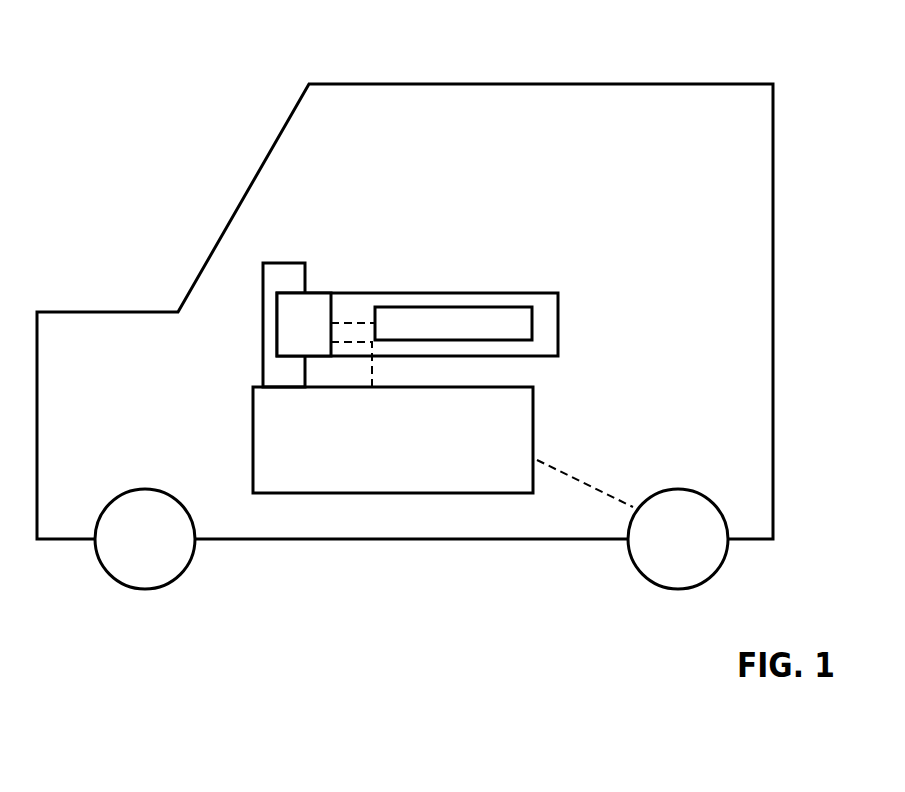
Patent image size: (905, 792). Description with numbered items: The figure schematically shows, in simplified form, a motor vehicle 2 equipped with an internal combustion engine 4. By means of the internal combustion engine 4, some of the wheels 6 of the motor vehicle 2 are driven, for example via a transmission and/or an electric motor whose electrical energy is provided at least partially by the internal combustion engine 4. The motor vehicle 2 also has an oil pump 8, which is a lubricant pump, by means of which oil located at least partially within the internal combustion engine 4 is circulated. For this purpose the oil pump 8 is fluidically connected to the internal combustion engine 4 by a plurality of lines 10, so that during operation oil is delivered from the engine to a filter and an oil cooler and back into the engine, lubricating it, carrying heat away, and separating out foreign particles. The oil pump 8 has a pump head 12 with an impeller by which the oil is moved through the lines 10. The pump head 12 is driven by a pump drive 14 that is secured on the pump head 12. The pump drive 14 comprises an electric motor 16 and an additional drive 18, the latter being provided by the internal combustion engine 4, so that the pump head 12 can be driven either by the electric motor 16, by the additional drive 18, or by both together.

The motor vehicle 2 is at (775, 335).
The internal combustion engine 4 is at (382, 453).
The wheels 6 is at (670, 552).
The oil pump 8 is at (408, 293).
The lines 10 is at (263, 327).
The pump head 12 is at (318, 333).
The pump drive 14 is at (508, 293).
The electric motor 16 is at (438, 323).
The additional drive 18 is at (347, 342).